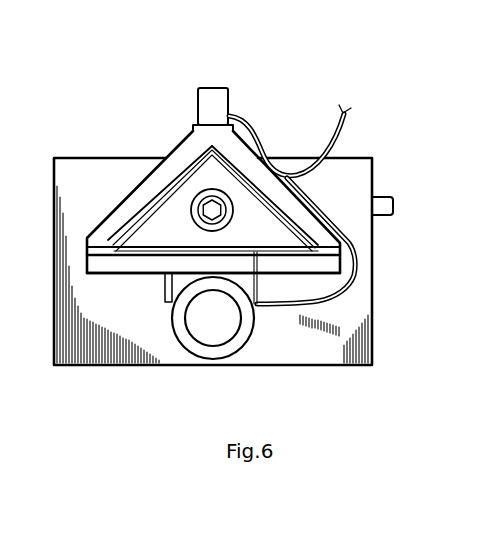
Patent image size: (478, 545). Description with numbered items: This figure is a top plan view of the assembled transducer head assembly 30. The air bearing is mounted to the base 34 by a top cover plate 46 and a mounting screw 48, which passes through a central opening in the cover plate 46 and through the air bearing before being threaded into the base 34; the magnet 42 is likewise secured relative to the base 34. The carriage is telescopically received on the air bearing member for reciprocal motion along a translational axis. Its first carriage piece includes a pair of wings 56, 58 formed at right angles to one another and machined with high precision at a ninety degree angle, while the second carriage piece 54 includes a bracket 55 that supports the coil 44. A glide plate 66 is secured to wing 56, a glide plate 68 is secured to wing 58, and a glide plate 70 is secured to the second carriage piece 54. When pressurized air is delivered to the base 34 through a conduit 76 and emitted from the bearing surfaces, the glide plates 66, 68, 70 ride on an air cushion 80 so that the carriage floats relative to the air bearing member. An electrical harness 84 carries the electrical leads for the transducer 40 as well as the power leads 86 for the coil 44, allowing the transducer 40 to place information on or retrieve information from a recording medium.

The transducer head assembly 30 is at (170, 86).
The base 34 is at (75, 350).
The transducer 40 is at (215, 105).
The magnet 42 is at (202, 329).
The coil 44 is at (210, 355).
The top cover plate 46 is at (267, 243).
The mounting screw 48 is at (196, 226).
The second carriage piece 54 is at (128, 266).
The bracket 55 is at (166, 283).
The wing 56 is at (140, 200).
The wing 58 is at (280, 188).
The glide plate 66 is at (125, 228).
The glide plate 68 is at (305, 207).
The glide plate 70 is at (148, 268).
The conduit 76 is at (387, 197).
The air cushion 80 is at (182, 172).
The electrical harness 84 is at (349, 118).
The power leads 86 is at (358, 270).